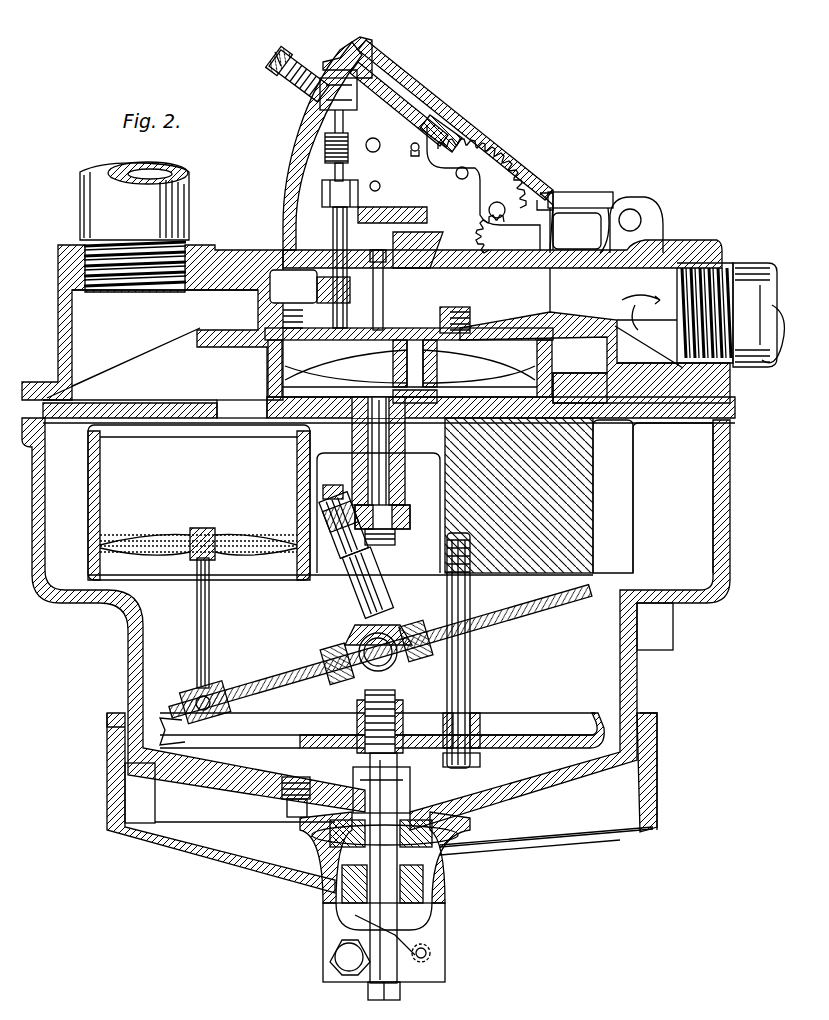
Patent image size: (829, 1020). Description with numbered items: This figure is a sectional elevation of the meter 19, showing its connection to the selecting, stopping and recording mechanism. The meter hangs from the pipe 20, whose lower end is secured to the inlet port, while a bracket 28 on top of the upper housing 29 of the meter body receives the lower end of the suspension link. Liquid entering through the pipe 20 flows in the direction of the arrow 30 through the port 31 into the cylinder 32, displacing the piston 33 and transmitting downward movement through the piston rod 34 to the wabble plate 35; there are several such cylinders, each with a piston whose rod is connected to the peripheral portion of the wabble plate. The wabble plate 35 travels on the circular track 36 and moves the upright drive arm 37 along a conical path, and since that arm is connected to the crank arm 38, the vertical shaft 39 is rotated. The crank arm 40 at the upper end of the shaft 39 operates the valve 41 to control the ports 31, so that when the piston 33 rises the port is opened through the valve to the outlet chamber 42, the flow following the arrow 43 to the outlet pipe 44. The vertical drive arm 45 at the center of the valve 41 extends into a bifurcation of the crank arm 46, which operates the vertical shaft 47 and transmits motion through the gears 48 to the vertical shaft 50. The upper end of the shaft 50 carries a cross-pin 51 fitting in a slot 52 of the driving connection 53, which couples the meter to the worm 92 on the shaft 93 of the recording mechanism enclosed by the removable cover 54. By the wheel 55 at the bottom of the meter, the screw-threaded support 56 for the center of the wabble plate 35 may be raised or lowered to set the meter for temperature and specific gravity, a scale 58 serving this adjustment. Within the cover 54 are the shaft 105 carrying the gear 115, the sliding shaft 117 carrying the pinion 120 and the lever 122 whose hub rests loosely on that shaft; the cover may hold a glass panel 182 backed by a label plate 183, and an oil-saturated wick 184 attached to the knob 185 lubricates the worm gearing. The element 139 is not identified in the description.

The meter 19 is at (118, 610).
The pipe 20 is at (105, 205).
The bracket 28 is at (645, 230).
The upper housing 29 is at (562, 255).
The arrow 30 is at (142, 308).
The port 31 is at (245, 412).
The cylinder 32 is at (100, 485).
The piston 33 is at (185, 560).
The piston rod 34 is at (212, 625).
The wabble plate 35 is at (258, 690).
The track 36 is at (540, 715).
The upright drive arm 37 is at (352, 565).
The crank arm 38 is at (322, 508).
The vertical shaft 39 is at (386, 484).
The crank arm 40 is at (432, 394).
The valve 41 is at (557, 390).
The outlet chamber 42 is at (663, 270).
The arrow 43 is at (613, 315).
The outlet pipe 44 is at (752, 265).
The vertical drive arm 45 is at (437, 340).
The crank arm 46 is at (417, 353).
The vertical shaft 47 is at (384, 300).
The gears 48 is at (404, 266).
The vertical shaft 50 is at (292, 212).
The cross-pin 51 is at (345, 185).
The slot 52 is at (330, 200).
The driving connection 53 is at (382, 188).
The cover 54 is at (500, 160).
The wheel 55 is at (658, 820).
The screw-threaded support 56 is at (398, 700).
The scale 58 is at (660, 760).
The worm 92 is at (372, 140).
The shaft 93 is at (340, 113).
The shaft 105 is at (460, 180).
The gear 115 is at (497, 165).
The sliding shaft 117 is at (553, 212).
The pinion 120 is at (489, 210).
The lever 122 is at (590, 195).
The screw 139 is at (400, 137).
The glass panel 182 is at (395, 95).
The label plate 183 is at (430, 120).
The wick 184 is at (322, 60).
The knob 185 is at (275, 68).